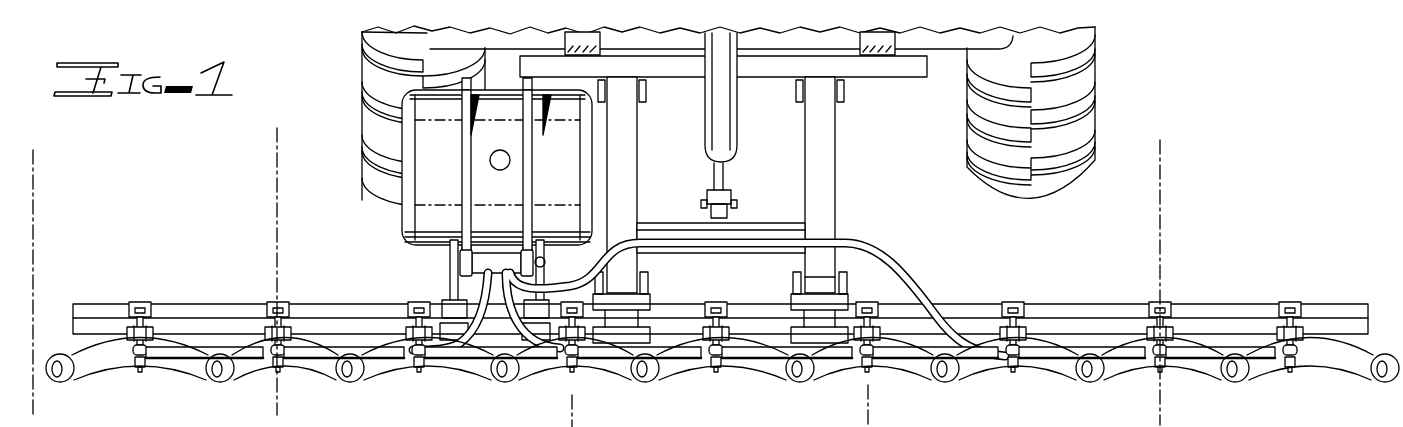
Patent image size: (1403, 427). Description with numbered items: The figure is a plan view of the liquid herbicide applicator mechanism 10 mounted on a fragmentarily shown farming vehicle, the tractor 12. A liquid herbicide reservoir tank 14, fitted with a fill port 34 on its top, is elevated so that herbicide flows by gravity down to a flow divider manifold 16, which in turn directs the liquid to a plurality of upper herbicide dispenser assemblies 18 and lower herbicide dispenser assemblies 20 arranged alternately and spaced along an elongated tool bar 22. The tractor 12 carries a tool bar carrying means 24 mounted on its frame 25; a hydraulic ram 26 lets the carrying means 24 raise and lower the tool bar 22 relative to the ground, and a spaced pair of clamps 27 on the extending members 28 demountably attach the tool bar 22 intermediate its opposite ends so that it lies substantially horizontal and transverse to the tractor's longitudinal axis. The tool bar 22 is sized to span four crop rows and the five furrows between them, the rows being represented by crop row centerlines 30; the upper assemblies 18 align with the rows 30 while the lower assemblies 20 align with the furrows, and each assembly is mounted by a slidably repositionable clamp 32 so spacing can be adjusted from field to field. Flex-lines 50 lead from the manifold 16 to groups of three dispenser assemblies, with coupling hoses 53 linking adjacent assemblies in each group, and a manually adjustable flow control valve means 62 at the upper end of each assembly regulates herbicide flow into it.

The herbicide applicator mechanism 10 is at (1216, 195).
The tractor 12 is at (1108, 93).
The liquid herbicide reservoir tank 14 is at (402, 206).
The flow divider manifold 16 is at (450, 262).
The upper herbicide dispenser assembly 18 is at (226, 372).
The lower herbicide dispenser assembly 20 is at (112, 378).
The tool bar 22 is at (212, 302).
The tool bar carrying means 24 is at (836, 118).
The frame 25 is at (928, 74).
The hydraulic ram 26 is at (740, 98).
The clamp 27 is at (648, 300).
The extending member 28 is at (630, 150).
The crop row centerline 30 is at (36, 290).
The slidably repositionable clamp 32 is at (142, 290).
The fill port 34 is at (500, 150).
The flex-line 50 is at (855, 245).
The coupling hose 53 is at (250, 358).
The flow control valve means 62 is at (140, 370).